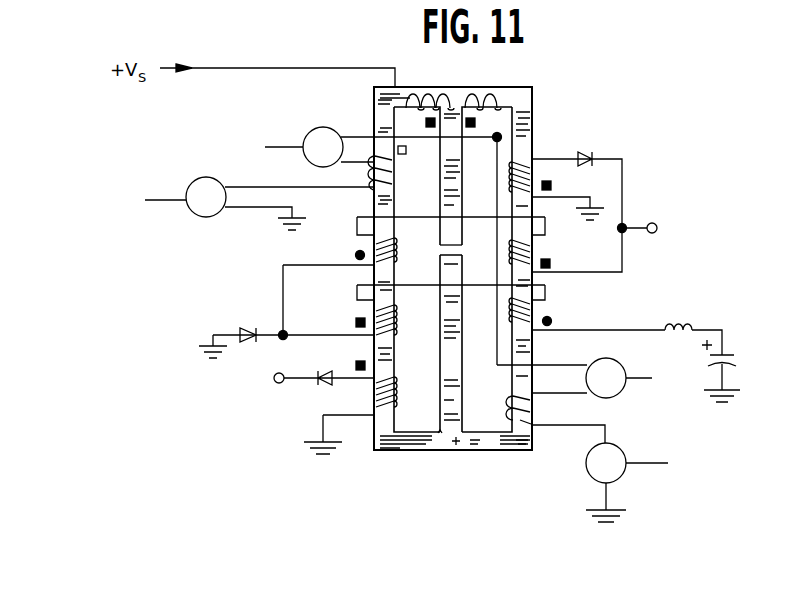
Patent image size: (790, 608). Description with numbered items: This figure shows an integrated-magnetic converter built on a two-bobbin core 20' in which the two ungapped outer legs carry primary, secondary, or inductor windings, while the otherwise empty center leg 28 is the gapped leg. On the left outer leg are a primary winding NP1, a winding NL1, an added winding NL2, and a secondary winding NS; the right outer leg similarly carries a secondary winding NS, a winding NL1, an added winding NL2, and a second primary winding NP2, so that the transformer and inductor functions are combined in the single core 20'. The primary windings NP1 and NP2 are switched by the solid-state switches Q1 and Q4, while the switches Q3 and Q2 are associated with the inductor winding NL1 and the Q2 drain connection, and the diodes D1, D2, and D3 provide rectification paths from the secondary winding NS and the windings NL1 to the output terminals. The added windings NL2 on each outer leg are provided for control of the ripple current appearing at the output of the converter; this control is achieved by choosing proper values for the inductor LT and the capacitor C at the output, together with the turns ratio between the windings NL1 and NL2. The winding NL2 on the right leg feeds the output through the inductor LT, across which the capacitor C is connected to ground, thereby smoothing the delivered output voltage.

The transformer core 20' is at (453, 293).
The center leg of core 28 is at (458, 376).
The primary winding NP1 is at (406, 173).
The primary winding NP2 is at (555, 419).
The winding NL1 is at (439, 283).
The added winding NL2 is at (455, 312).
The secondary winding NS is at (452, 308).
The transistor Q1 is at (373, 239).
The transistor Q2 is at (583, 369).
The transistor Q3 is at (251, 198).
The transistor Q4 is at (635, 473).
The diode D1 is at (616, 200).
The diode D2 is at (300, 371).
The diode D3 is at (286, 329).
The inductor LT is at (627, 325).
The capacitor C is at (723, 369).